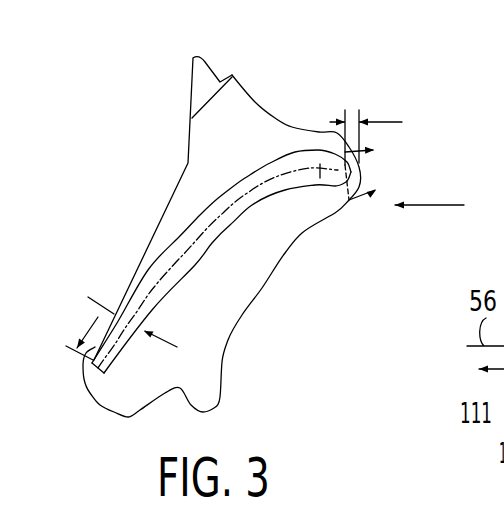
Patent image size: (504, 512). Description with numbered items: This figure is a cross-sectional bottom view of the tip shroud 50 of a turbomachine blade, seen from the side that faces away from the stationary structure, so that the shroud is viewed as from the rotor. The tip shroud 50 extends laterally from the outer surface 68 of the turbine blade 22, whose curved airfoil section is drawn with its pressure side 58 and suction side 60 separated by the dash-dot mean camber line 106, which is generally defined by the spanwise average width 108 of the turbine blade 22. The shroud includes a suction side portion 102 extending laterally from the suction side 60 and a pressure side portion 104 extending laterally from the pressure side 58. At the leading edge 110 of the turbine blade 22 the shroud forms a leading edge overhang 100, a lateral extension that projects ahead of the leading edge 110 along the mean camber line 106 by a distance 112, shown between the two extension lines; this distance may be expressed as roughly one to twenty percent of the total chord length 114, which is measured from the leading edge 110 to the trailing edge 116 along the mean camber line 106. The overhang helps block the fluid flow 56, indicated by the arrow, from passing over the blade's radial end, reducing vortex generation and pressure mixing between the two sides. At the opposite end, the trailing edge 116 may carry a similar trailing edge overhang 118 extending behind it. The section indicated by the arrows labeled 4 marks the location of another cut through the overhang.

The turbine blade 22 is at (190, 220).
The tip shroud 50 is at (287, 121).
The fluid flow 56 is at (438, 205).
The pressure side 58 is at (200, 265).
The suction side 60 is at (177, 239).
The outer surface 68 is at (210, 200).
The leading edge overhang 100 is at (360, 168).
The suction side portion 102 is at (200, 135).
The pressure side portion 104 is at (233, 272).
The mean camber line 106 is at (146, 304).
The spanwise average width 108 is at (119, 315).
The leading edge 110 is at (358, 198).
The distance 112 is at (384, 122).
The total chord length 114 is at (293, 148).
The trailing edge 116 is at (90, 394).
The trailing edge overhang 118 is at (82, 386).
The section line 4- 4 is at (370, 167).